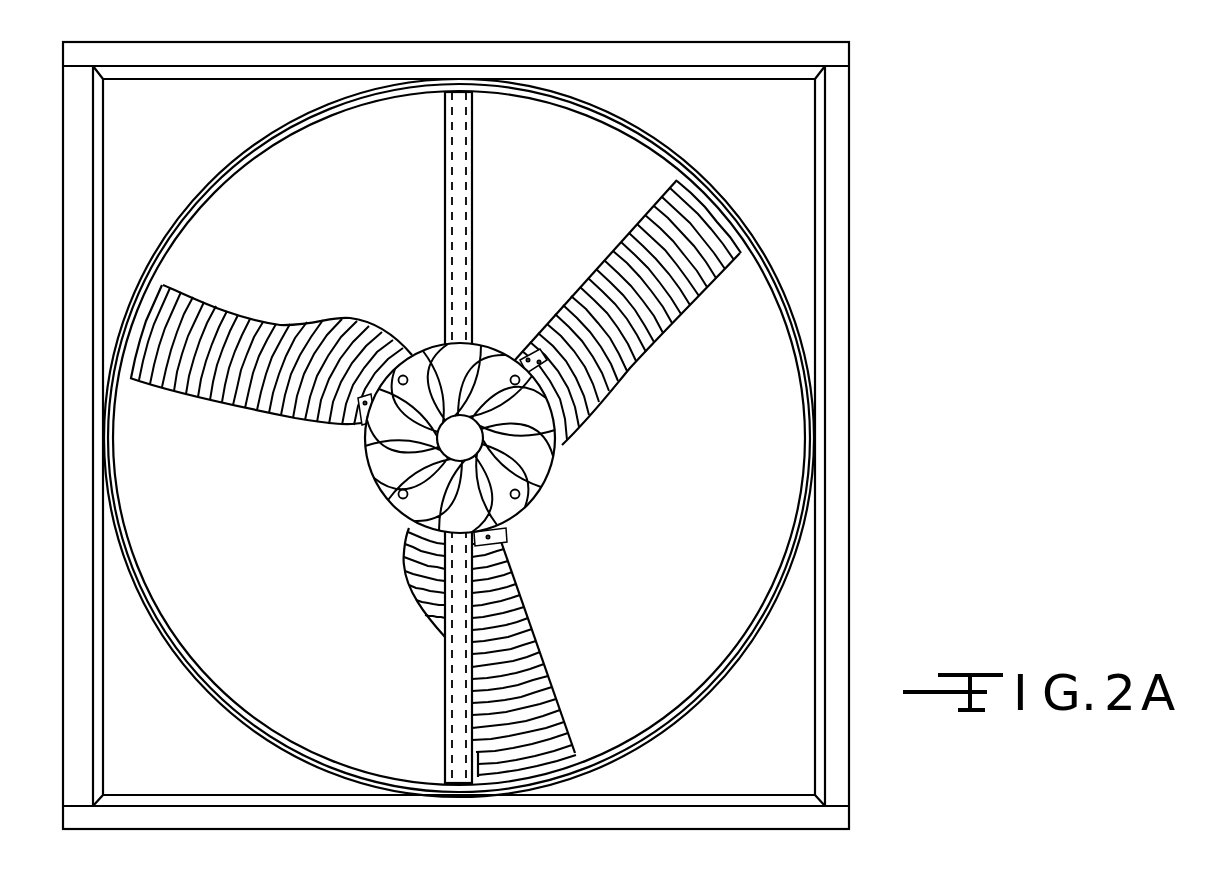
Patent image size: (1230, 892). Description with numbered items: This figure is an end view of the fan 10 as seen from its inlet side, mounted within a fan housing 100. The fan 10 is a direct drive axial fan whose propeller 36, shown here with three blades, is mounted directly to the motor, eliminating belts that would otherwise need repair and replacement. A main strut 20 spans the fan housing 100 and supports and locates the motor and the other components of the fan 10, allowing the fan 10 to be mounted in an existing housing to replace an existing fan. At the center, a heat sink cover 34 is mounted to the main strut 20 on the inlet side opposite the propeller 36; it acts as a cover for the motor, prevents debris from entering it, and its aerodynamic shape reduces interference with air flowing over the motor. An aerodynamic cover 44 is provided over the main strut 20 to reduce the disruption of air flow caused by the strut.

The fan housing 100 is at (840, 155).
The fan 10 is at (435, 437).
The main strut 20 is at (468, 213).
The propeller 36 is at (665, 298).
The heat sink cover 34 is at (537, 487).
The aerodynamic cover 44 is at (457, 712).